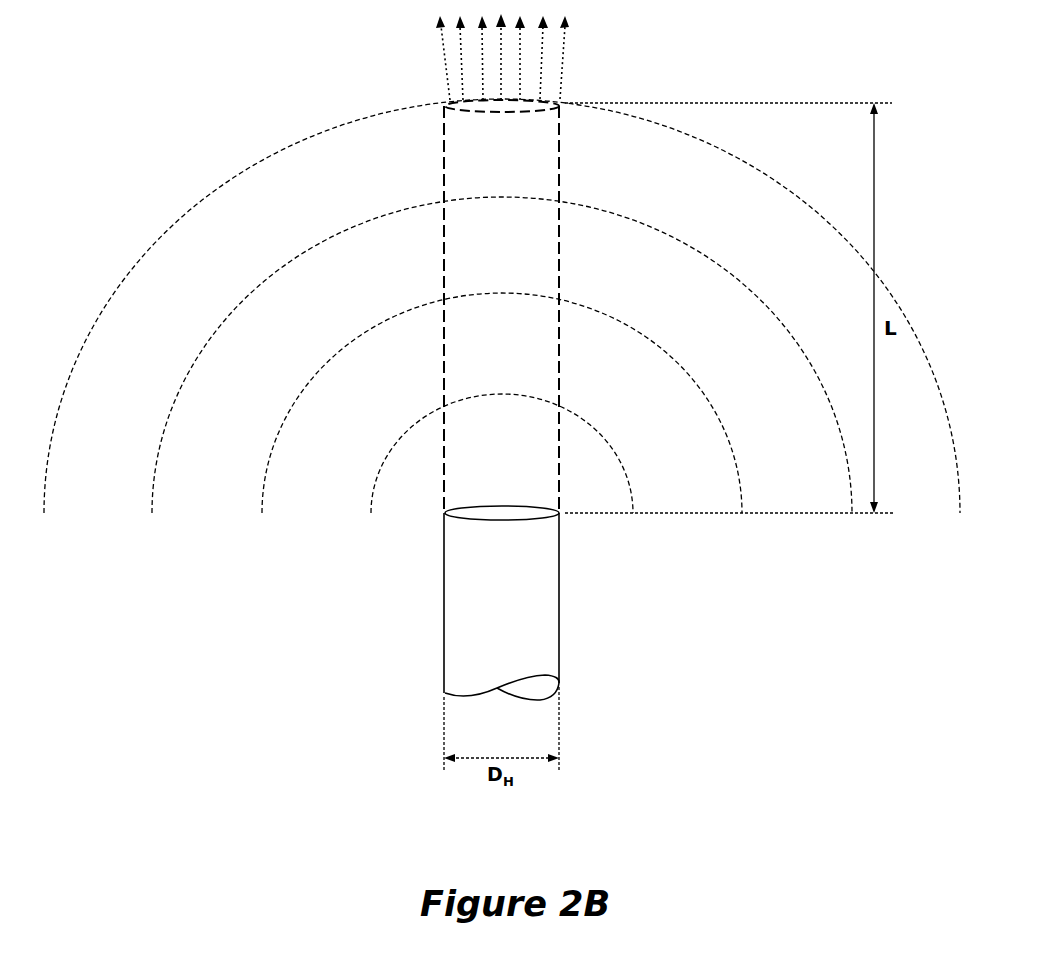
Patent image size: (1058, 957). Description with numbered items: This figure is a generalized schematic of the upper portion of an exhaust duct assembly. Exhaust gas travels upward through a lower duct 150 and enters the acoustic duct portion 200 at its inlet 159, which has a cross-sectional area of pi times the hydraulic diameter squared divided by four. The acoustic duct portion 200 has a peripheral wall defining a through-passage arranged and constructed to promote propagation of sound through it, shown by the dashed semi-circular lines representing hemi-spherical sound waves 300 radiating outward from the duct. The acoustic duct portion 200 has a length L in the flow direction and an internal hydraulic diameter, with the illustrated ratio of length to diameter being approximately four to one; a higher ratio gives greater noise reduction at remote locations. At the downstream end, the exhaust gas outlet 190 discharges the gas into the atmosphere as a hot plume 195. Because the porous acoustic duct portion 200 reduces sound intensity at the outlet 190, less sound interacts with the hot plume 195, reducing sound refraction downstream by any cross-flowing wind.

The hole / heating element tube 150 is at (562, 612).
The inlet 159 is at (533, 519).
The exhaust gas outlet 190 is at (560, 100).
The hot plume 195 is at (447, 57).
The acoustic duct portion 200 is at (560, 140).
The hemi-spherical sound waves 300 is at (243, 298).